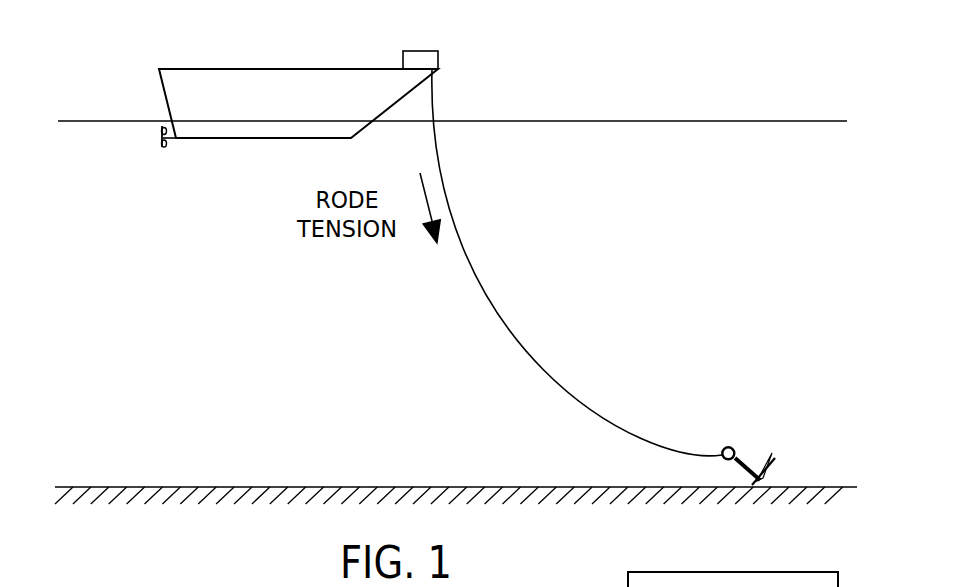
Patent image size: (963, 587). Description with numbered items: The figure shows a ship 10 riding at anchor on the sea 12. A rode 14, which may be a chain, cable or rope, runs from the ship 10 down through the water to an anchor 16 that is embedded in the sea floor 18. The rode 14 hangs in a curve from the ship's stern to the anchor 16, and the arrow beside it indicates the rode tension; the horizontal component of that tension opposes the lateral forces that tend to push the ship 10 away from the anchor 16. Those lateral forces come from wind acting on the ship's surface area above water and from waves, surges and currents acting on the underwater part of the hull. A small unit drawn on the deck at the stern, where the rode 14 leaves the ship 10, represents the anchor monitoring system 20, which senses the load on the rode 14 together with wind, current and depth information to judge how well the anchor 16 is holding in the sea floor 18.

The ship 10 is at (317, 70).
The sea 12 is at (297, 350).
The rode 14 is at (507, 330).
The anchor 16 is at (775, 458).
The sea floor 18 is at (387, 487).
The anchor monitoring system 20 is at (420, 51).